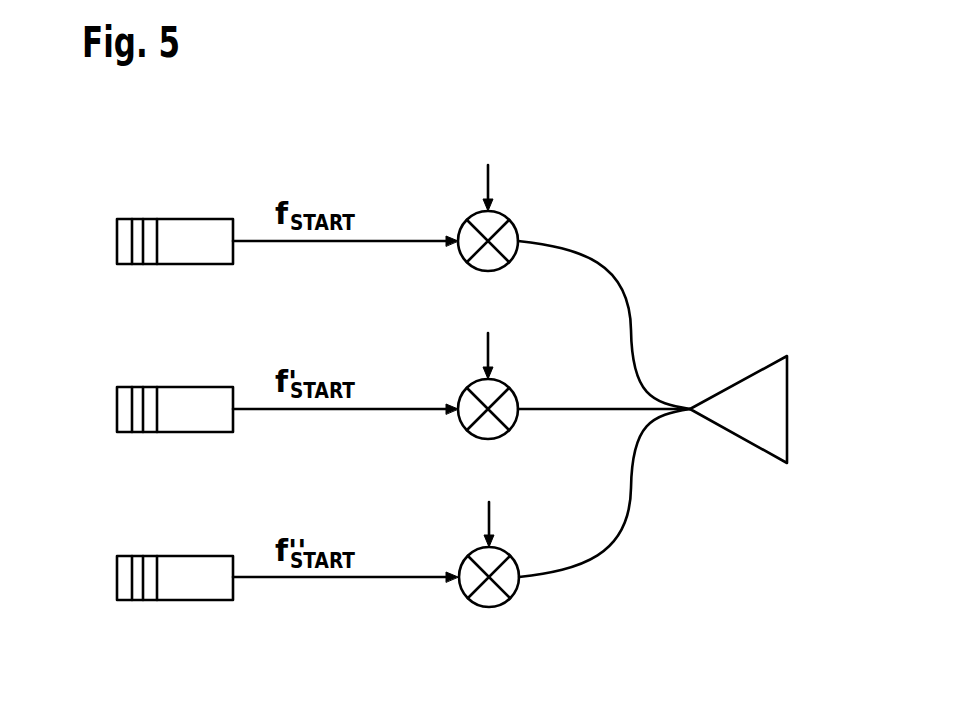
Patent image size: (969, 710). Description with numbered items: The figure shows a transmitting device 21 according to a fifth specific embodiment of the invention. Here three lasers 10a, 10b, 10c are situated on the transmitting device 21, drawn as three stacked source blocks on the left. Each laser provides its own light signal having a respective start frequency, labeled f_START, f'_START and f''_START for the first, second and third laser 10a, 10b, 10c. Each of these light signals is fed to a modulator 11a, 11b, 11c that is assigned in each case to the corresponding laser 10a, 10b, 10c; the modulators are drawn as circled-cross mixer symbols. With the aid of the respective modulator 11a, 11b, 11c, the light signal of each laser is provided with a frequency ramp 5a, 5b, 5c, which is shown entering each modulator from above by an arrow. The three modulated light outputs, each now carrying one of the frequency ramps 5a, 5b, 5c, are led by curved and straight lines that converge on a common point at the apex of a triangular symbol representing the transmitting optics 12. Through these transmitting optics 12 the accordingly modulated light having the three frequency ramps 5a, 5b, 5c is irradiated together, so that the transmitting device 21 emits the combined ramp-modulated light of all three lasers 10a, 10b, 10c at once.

The laser 10a is at (172, 219).
The laser 10b is at (180, 387).
The laser 10c is at (180, 556).
The modulator 11a is at (462, 222).
The modulator 11b is at (462, 390).
The modulator 11c is at (463, 558).
The frequency ramp 5a is at (496, 172).
The frequency ramp 5b is at (496, 341).
The frequency ramp 5c is at (497, 509).
The transmitting optics 12 is at (748, 377).
The transmitting device 21 is at (739, 215).